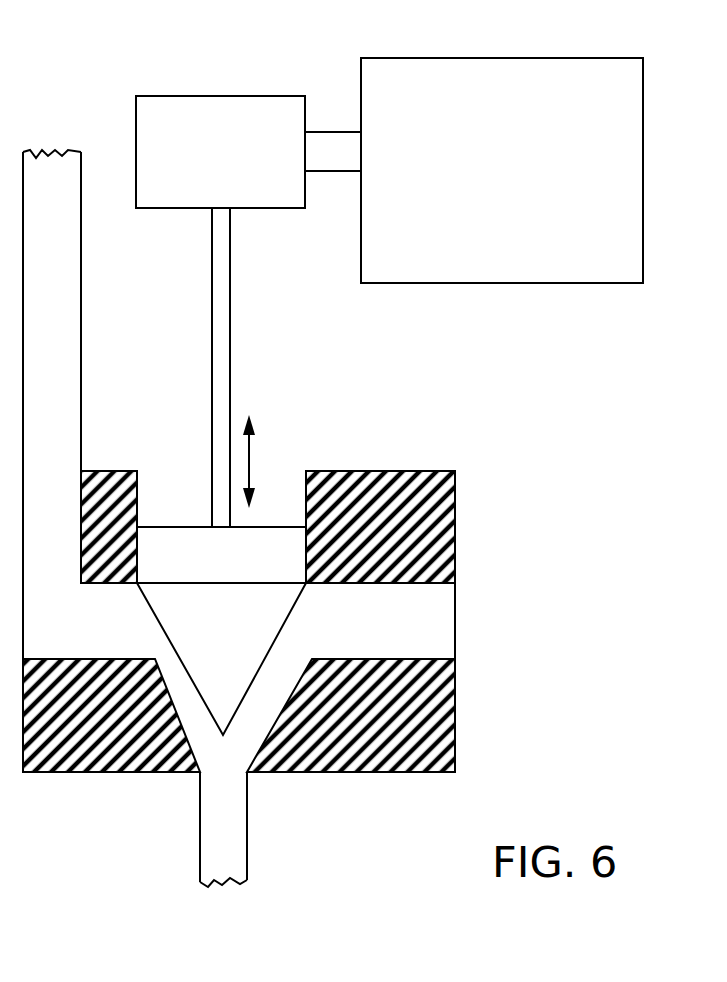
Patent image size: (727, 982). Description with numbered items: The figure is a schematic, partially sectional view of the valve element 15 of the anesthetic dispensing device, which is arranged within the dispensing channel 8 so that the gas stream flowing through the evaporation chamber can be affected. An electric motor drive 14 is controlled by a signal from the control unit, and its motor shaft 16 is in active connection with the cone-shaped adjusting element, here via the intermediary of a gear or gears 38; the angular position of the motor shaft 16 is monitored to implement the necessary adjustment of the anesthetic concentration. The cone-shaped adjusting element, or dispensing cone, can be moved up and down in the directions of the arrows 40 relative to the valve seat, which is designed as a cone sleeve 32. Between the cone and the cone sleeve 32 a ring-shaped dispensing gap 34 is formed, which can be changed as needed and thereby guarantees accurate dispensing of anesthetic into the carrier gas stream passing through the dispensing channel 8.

The dispensing channel 8 is at (81, 343).
The electric motor drive 14 is at (480, 276).
The valve element 15 is at (482, 588).
The motor shaft 16 is at (328, 173).
The cone sleeve 32 is at (167, 708).
The ring-shaped dispensing gap 34 is at (140, 642).
The gears 38 is at (218, 94).
The arrows indicating directions of movement 40 is at (248, 463).